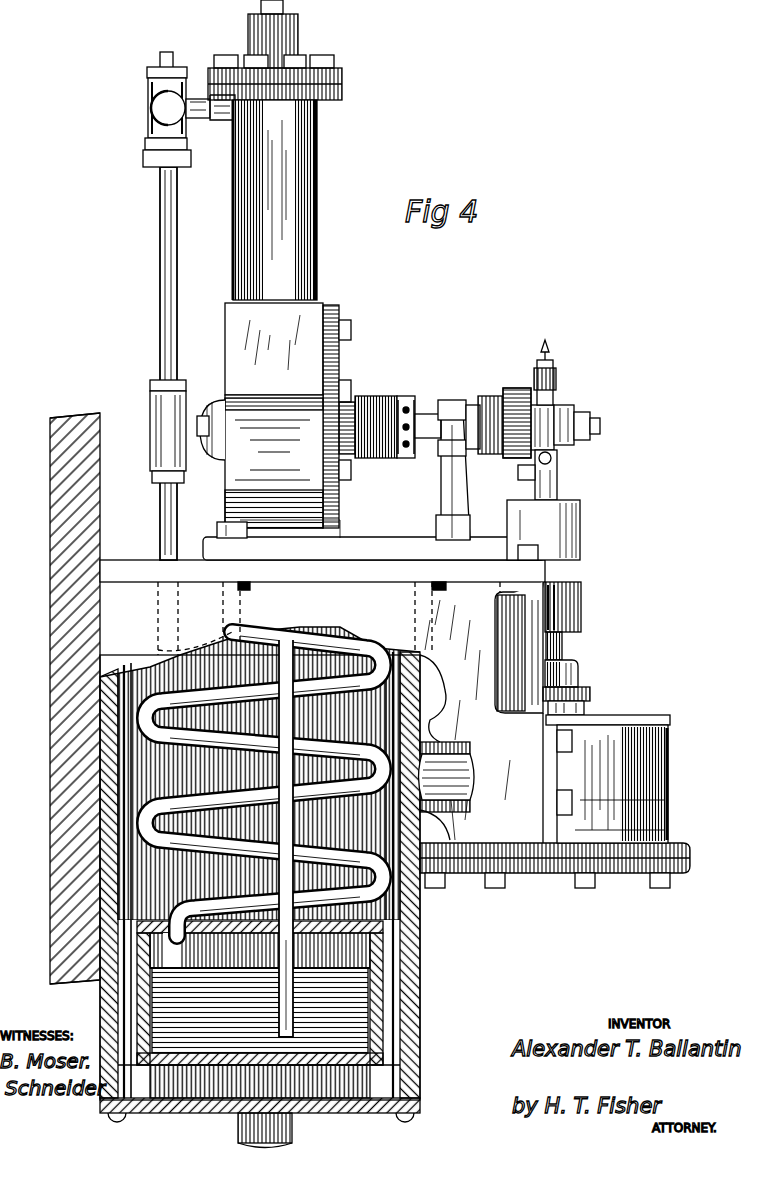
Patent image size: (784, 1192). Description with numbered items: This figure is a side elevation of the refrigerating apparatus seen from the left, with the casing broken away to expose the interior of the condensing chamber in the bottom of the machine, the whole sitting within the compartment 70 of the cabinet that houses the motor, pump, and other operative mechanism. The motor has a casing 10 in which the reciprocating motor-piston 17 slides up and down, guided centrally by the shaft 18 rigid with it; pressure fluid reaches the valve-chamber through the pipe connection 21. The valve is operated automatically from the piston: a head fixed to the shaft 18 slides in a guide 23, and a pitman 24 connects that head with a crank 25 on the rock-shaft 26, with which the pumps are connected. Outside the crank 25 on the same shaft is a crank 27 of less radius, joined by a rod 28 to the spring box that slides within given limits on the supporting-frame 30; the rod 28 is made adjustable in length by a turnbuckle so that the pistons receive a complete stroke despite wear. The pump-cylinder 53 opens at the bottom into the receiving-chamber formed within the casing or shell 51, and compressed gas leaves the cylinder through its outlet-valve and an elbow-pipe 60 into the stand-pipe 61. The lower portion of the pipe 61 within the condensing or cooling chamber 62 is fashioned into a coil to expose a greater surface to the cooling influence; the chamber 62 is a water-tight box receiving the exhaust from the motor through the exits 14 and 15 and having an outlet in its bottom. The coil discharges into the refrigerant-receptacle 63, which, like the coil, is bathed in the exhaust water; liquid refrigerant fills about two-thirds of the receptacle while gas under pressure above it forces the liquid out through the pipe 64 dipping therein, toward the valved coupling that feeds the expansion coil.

The casing 10 is at (128, 565).
The exit 14 is at (480, 711).
The exit 15 is at (481, 778).
The motor-piston 17 is at (668, 780).
The shaft 18 is at (556, 650).
The pipe connection 21 is at (462, 777).
The guide 23 is at (583, 556).
The pitman 24 is at (556, 492).
The crank 25 is at (518, 390).
The rock-shaft 26 is at (424, 412).
The crank 27 is at (565, 428).
The rod 28 is at (585, 440).
The supporting-frame 30 is at (490, 395).
The casing or shell 51 is at (335, 372).
The pump-cylinder 53 is at (316, 272).
The elbow-pipe 60 is at (200, 120).
The stand-pipe 61 is at (177, 280).
The condensing or cooling chamber 62 is at (402, 905).
The refrigerant-receptacle 63 is at (384, 958).
The pipe 64 is at (335, 630).
The compartment 70 is at (58, 812).